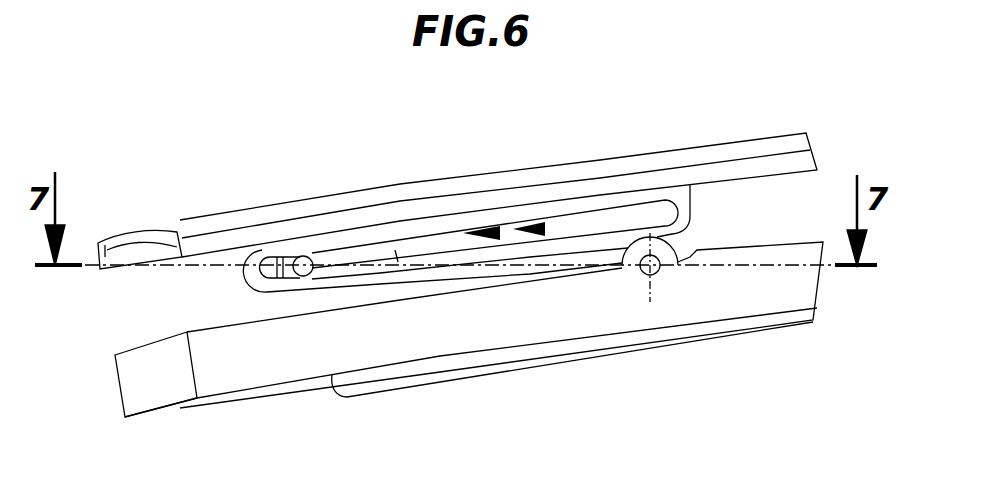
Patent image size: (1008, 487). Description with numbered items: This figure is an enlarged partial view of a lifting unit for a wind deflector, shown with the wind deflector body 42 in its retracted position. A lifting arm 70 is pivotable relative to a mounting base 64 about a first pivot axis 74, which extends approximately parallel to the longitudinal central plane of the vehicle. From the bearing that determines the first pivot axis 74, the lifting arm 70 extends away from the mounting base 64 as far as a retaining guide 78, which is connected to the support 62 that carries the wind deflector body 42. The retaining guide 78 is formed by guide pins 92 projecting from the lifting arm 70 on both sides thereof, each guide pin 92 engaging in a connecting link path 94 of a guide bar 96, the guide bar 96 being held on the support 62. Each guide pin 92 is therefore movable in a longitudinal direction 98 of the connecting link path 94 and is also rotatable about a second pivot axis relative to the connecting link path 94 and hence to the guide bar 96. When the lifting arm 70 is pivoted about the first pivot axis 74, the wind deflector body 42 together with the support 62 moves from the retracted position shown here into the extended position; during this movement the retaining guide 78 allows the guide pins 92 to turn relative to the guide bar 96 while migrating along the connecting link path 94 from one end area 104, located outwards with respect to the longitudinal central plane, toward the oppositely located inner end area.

The wind deflector body 42 is at (560, 178).
The support 62 is at (657, 182).
The mounting base 64 is at (225, 365).
The lifting arm 70 is at (540, 267).
The first pivot axis 74 is at (660, 273).
The retaining guide 78 is at (350, 275).
The guide pin 92 is at (317, 272).
The connecting link path 94 is at (398, 258).
The guide bar 96 is at (243, 282).
The longitudinal direction 98 is at (500, 218).
The end area 104 is at (287, 258).